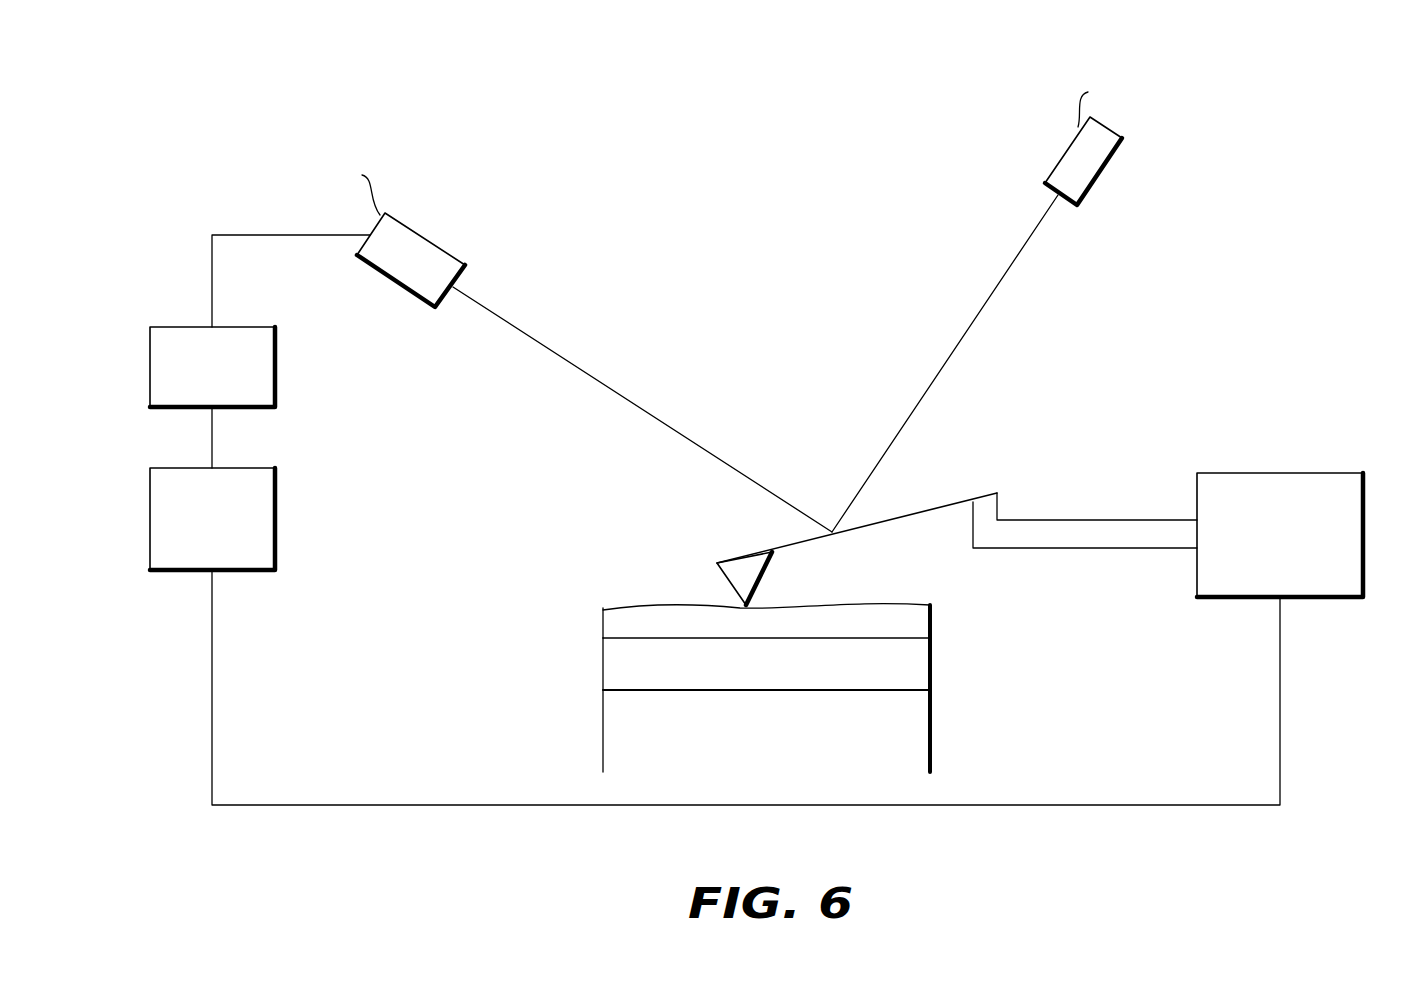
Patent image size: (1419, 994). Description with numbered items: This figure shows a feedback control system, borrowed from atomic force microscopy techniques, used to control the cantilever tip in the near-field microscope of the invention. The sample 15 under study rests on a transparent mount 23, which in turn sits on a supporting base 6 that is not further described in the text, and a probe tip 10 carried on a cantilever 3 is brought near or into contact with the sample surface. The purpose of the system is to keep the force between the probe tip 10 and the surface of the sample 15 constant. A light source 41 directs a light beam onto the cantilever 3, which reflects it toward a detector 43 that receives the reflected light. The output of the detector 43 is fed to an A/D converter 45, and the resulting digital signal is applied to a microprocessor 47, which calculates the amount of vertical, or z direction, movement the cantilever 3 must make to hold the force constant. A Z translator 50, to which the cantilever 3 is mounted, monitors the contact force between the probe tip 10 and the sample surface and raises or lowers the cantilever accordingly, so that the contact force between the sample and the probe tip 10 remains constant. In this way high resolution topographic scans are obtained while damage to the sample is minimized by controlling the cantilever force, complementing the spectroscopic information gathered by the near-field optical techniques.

The cantilever 3 is at (957, 502).
The substrate 6 is at (915, 717).
The probe tip 10 is at (725, 580).
The sample 15 is at (915, 615).
The transparent mount 23 is at (915, 653).
The light source 41 is at (1108, 168).
The detector 43 is at (450, 247).
The A/D converter 45 is at (275, 372).
The microprocessor 47 is at (275, 508).
The Z translator 50 is at (1350, 473).